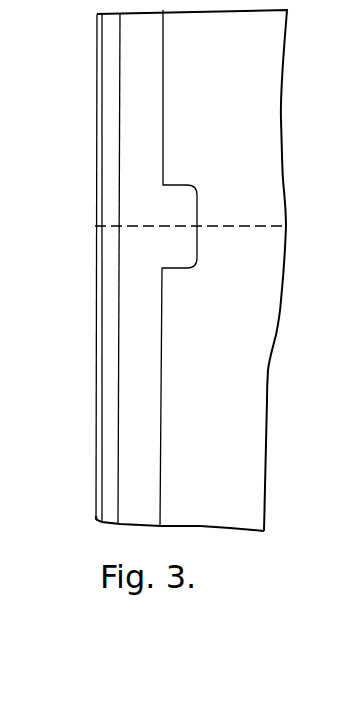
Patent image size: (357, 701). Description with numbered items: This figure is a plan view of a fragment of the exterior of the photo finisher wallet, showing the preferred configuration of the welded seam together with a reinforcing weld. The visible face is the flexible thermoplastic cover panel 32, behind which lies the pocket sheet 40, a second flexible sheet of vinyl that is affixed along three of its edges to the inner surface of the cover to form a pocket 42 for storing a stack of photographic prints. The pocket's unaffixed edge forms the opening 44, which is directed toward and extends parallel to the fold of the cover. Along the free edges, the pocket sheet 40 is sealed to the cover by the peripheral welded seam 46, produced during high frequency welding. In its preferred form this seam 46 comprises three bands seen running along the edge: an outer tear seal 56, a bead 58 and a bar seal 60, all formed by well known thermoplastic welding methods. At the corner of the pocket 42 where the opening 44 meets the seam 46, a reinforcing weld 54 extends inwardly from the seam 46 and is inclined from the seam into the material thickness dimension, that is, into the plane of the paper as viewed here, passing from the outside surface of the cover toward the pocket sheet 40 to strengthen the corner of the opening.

The front cover panel 32 is at (234, 128).
The pocket sheet 40 is at (213, 380).
The pocket 42 is at (150, 222).
The pocket opening 44 is at (177, 228).
The welded seam 46 is at (127, 528).
The reinforcing weld 54 is at (197, 252).
The outer tear seal 56 is at (97, 71).
The bead 58 is at (110, 61).
The bar seal 60 is at (133, 90).